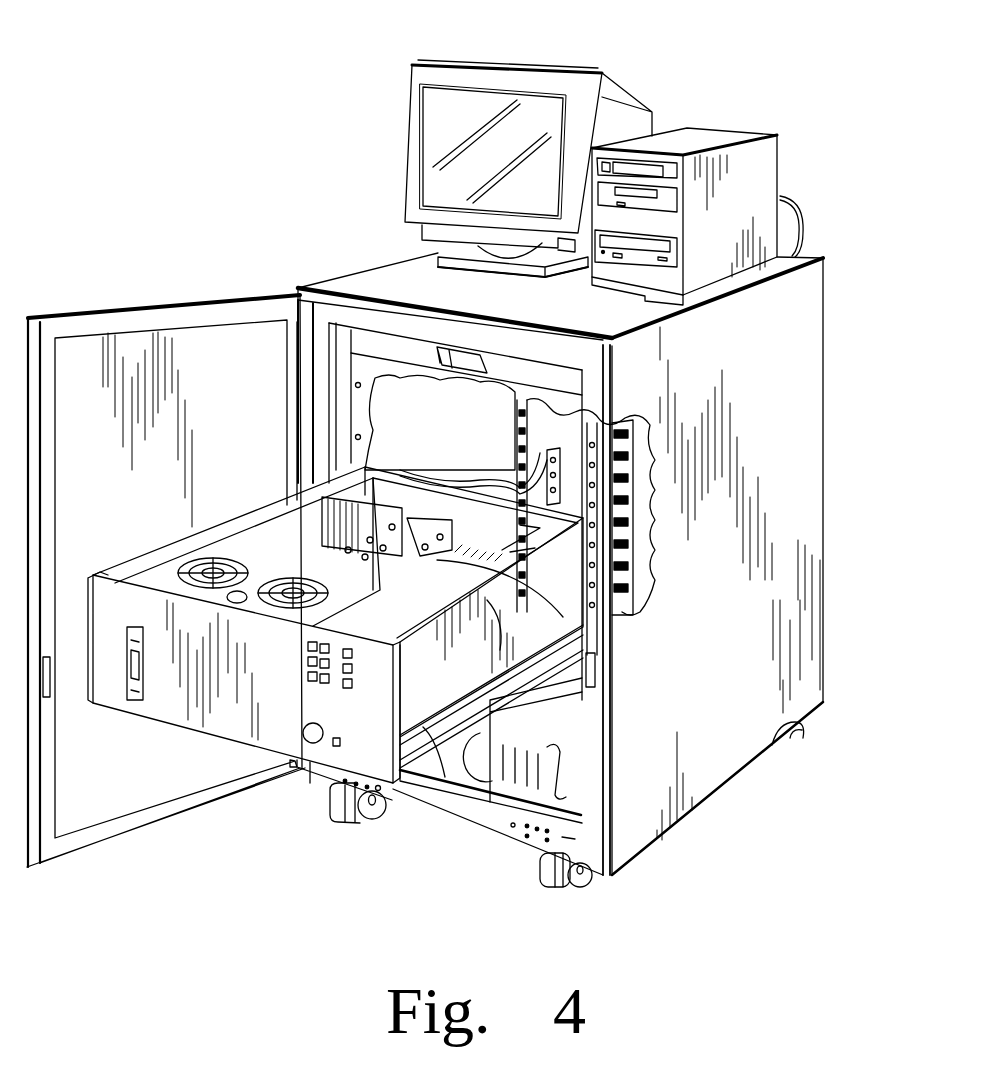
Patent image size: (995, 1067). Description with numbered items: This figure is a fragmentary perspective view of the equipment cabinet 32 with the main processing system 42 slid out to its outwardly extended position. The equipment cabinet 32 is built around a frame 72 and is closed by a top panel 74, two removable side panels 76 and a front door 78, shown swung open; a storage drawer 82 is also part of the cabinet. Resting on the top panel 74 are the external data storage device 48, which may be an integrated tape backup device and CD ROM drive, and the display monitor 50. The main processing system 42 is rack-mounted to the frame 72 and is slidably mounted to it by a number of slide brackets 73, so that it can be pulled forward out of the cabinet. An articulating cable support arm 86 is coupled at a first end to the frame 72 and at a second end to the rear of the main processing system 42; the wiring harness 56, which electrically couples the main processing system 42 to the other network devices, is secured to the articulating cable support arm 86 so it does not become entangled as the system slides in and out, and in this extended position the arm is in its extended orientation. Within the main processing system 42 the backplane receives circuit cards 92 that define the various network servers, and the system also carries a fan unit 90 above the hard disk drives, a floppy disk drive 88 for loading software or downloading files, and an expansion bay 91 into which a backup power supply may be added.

The equipment cabinet 32 is at (602, 551).
The main processing system 42 is at (335, 652).
The external data storage device 48 is at (720, 130).
The display monitor 50 is at (508, 62).
The wiring harness 56 is at (480, 480).
The frame 72 is at (607, 550).
The slide brackets 73 is at (443, 777).
The top panel 74 is at (340, 285).
The removable side panels 76 is at (806, 452).
The front door 78 is at (80, 332).
The storage drawer 82 is at (560, 378).
The articulating cable support arm 86 is at (415, 468).
The floppy disk drive 88 is at (133, 700).
The fan unit 90 is at (160, 572).
The expansion bay 91 is at (403, 600).
The circuit cards 92 is at (583, 643).